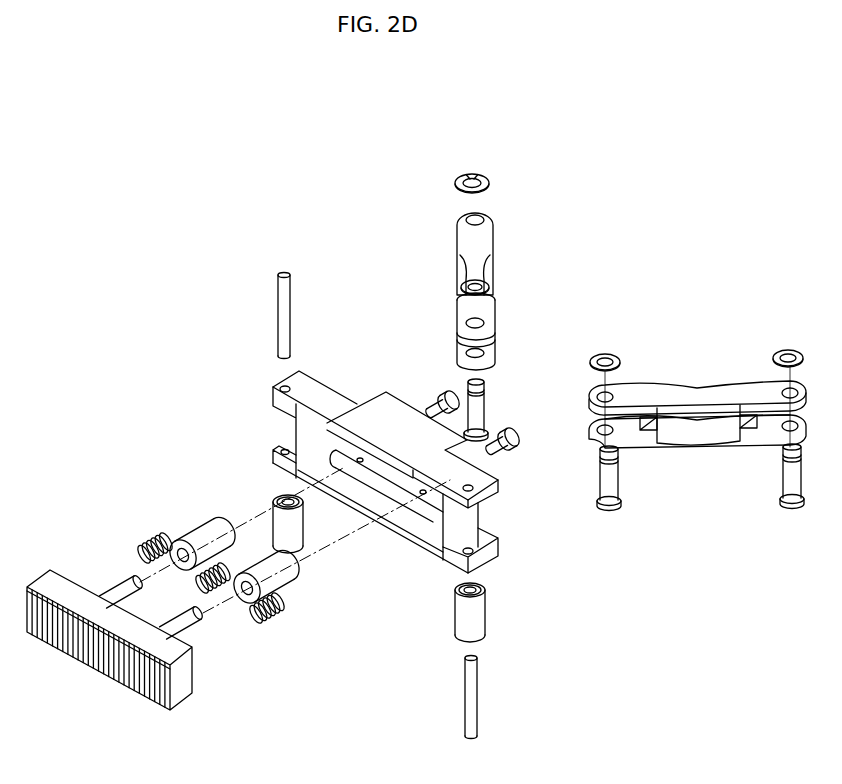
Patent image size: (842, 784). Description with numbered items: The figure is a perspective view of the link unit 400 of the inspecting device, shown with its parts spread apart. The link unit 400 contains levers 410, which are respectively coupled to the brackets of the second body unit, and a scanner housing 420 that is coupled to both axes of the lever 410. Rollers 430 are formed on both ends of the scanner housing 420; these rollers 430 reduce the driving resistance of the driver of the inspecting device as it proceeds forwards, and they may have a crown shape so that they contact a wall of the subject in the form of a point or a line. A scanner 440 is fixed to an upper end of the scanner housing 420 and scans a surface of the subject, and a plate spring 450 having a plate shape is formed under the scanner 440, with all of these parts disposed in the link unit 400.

The link unit 400 is at (409, 144).
The lever 410 is at (690, 430).
The scanner housing 420 is at (492, 560).
The roller 430 is at (465, 627).
The scanner 440 is at (113, 663).
The plate spring 450 is at (157, 533).